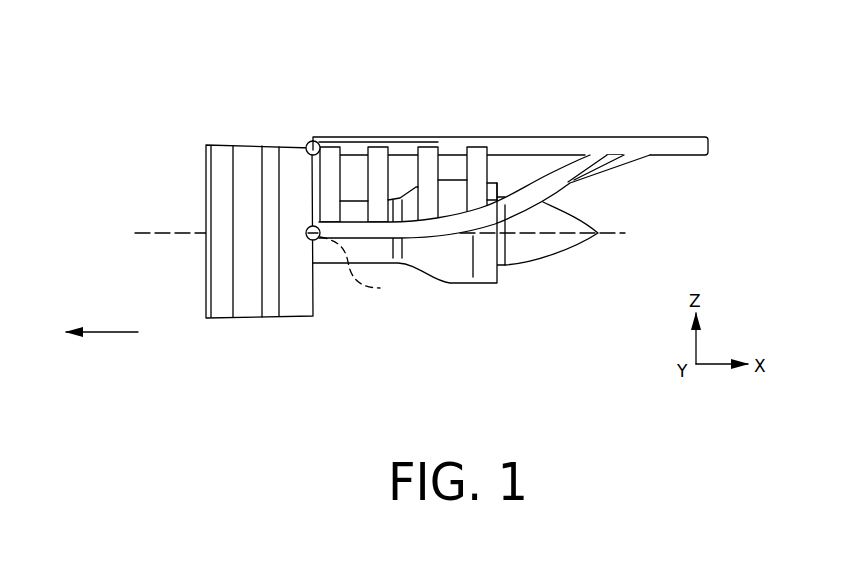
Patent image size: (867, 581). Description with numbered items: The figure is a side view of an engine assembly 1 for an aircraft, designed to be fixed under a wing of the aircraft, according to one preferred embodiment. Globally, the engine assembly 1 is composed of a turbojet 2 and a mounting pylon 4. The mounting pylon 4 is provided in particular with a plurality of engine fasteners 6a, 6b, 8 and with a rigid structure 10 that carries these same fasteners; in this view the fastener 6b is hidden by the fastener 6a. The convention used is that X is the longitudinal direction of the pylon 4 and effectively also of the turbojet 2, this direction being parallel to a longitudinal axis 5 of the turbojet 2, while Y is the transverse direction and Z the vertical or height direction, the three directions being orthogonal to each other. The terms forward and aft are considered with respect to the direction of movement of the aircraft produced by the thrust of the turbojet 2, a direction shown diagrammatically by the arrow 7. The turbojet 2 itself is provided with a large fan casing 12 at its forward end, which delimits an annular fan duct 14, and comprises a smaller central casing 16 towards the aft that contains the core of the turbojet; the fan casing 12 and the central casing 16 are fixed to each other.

The engine assembly 1 is at (437, 182).
The turbojet 2 is at (583, 278).
The mounting pylon 4 is at (517, 188).
The longitudinal axis 5 is at (608, 230).
The engine fastener 6a is at (317, 239).
The engine fastener 6b is at (368, 270).
The arrow 7 is at (112, 334).
The engine fastener 8 is at (313, 150).
The rigid structure 10 is at (683, 137).
The fan casing 12 is at (243, 162).
The annular fan duct 14 is at (378, 168).
The central casing 16 is at (452, 273).